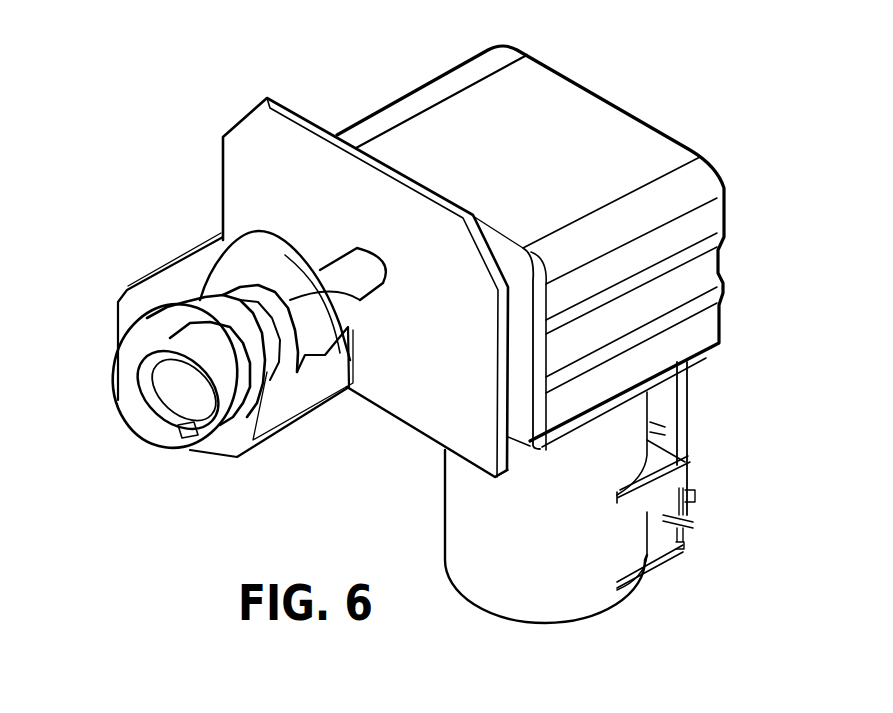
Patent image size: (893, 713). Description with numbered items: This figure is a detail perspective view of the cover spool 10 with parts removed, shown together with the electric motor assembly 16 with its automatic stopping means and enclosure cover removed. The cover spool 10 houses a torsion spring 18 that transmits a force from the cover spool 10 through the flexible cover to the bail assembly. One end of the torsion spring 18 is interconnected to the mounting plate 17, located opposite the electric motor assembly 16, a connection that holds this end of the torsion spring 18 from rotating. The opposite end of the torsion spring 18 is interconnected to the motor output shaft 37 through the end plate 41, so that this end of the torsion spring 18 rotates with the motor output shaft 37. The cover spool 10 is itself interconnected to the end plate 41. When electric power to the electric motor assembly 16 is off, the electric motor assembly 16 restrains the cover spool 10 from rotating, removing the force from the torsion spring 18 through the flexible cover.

The cover spool 10 is at (162, 288).
The electric motor assembly 16 is at (492, 137).
The mounting plate 17 is at (267, 173).
The torsion spring 18 is at (135, 400).
The motor output shaft 37 is at (348, 270).
The end plate 41 is at (360, 300).